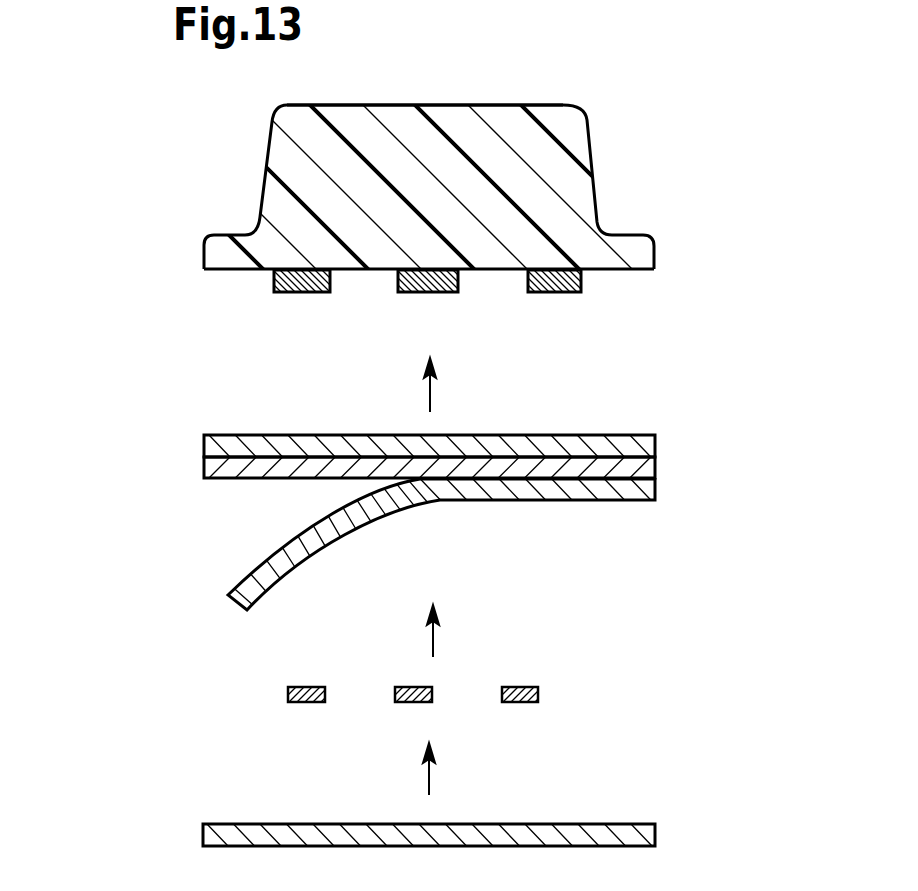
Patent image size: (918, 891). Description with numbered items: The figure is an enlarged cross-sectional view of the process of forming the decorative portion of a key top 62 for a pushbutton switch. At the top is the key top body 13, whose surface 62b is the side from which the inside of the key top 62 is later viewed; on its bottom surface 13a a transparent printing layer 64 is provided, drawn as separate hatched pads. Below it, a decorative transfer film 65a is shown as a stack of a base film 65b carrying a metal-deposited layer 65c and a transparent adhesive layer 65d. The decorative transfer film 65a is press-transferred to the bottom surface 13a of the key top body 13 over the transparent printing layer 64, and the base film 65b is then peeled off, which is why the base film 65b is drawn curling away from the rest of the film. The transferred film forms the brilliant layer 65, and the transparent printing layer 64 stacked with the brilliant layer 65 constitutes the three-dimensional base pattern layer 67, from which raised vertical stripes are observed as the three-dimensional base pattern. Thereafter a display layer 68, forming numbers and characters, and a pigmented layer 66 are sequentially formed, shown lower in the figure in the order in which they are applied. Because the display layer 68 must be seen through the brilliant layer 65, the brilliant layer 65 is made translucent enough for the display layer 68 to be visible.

The key top 62 is at (650, 106).
The surface of the key top 62b is at (378, 104).
The key top body 13 is at (521, 105).
The bottom surface of the key top body 13a is at (613, 270).
The transparent printing layer 64 is at (276, 279).
The brilliant layer 65 is at (193, 435).
The decorative transfer film 65a is at (795, 413).
The base film 65b is at (657, 492).
The metal-deposited layer 65c is at (657, 465).
The transparent adhesive layer 65d is at (657, 438).
The pigmented layer 66 is at (657, 835).
The three-dimensional base pattern layer 67 is at (130, 335).
The display layer 68 is at (407, 702).